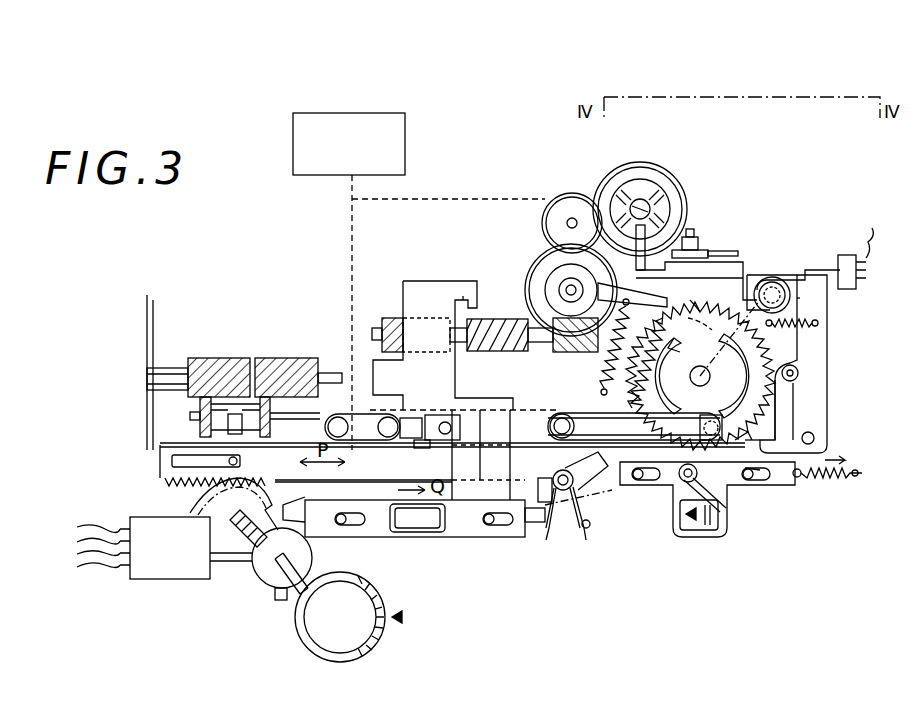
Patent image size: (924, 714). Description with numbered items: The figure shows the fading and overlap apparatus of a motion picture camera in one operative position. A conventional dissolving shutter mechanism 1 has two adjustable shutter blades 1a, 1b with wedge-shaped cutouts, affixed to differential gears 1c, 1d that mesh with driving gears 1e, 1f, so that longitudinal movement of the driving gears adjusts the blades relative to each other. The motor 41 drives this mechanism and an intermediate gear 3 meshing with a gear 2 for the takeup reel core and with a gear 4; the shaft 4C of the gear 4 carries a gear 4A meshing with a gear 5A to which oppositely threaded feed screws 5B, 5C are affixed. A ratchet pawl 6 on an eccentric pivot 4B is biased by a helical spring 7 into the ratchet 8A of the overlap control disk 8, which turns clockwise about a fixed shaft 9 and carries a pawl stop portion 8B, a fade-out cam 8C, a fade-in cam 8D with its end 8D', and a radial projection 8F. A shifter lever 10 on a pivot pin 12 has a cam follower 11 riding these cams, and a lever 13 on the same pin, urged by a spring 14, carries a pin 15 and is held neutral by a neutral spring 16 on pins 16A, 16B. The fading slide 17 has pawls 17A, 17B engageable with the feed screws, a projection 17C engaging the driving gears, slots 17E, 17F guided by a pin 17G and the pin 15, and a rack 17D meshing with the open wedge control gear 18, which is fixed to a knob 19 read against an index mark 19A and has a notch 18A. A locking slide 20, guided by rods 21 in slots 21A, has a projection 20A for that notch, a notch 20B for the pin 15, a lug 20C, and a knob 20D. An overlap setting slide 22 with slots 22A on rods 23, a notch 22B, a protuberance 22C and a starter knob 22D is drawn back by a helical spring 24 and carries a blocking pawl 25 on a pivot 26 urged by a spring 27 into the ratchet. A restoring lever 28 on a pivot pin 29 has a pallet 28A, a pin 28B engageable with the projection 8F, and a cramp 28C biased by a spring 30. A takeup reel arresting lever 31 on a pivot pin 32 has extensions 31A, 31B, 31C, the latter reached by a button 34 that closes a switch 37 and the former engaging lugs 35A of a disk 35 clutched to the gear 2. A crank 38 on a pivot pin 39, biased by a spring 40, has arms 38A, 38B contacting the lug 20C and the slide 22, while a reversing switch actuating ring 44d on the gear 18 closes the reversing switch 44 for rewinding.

The dissolving shutter mechanism 1 is at (246, 271).
The shutter blade 1a is at (147, 310).
The shutter blade 1b is at (153, 315).
The differential gear 1c is at (215, 358).
The differential gear 1d is at (288, 358).
The driving gear 1e is at (200, 424).
The driving gear 1f is at (270, 427).
The gear 2 is at (620, 166).
The intermediate gear 3 is at (556, 196).
The gear 4 is at (536, 265).
The gear 4A is at (545, 288).
The pivot 4B is at (559, 290).
The shaft 4C is at (576, 290).
The gear 5A is at (575, 352).
The feed screw 5B is at (508, 352).
The feed screw 5C is at (390, 318).
The ratchet pawl 6 is at (623, 284).
The helical spring 7 is at (609, 350).
The overlap control disk 8 is at (718, 308).
The ratchet 8A is at (704, 300).
The pawl stop portion 8B is at (694, 327).
The fade-out cam 8C is at (752, 375).
The fade-in cam 8D is at (672, 376).
The arm hook 8D' is at (688, 345).
The projection 8F is at (780, 410).
The shaft 9 is at (708, 382).
The shifter lever 10 is at (703, 415).
The cam follower 11 is at (746, 442).
The pivot pin 12 is at (564, 413).
The lever 13 is at (532, 413).
The spring 14 is at (632, 410).
The pin 15 is at (438, 415).
The neutral spring 16 is at (375, 414).
The pin 16A is at (340, 417).
The pin 16B is at (400, 412).
The fading slide 17 is at (420, 286).
The pawl 17A is at (467, 296).
The pawl 17B is at (373, 362).
The projection 17C is at (236, 434).
The toothed portion 17D is at (170, 482).
The elongated slot 17E is at (172, 461).
The elongated slot 17F is at (423, 448).
The pin 17G is at (206, 490).
The open wedge control gear 18 is at (252, 548).
The notch 18A is at (270, 572).
The knob 19 is at (320, 652).
The index mark 19A is at (403, 625).
The locking slide 20 is at (385, 537).
The projection 20A is at (290, 492).
The notch 20B is at (450, 422).
The lug 20C is at (540, 522).
The knob 20D is at (437, 537).
The rod 21 is at (340, 525).
The elongated slot 21A is at (357, 525).
The overlap setting slide 22 is at (760, 486).
The elongated slot 22A is at (642, 480).
The notch 22B is at (797, 478).
The protuberance 22C is at (600, 492).
The overlap starter knob 22D is at (697, 530).
The rod 23 is at (652, 482).
The helical spring 24 is at (828, 478).
The blocking pawl 25 is at (748, 480).
The pivot 26 is at (683, 482).
The spring 27 is at (695, 500).
The restoring lever 28 is at (827, 398).
The pallet 28A is at (769, 428).
The pin 28B is at (799, 372).
The cramp 28C is at (800, 298).
The pivot pin 29 is at (814, 437).
The helical spring 30 is at (790, 328).
The takeup reel arresting lever 31 is at (718, 262).
The lower extension 31A is at (730, 338).
The integral extension 31B is at (650, 232).
The extension 31C is at (766, 277).
The pivot pin 32 is at (698, 240).
The button 34 is at (800, 270).
The disk 35 is at (644, 172).
The lug 35A is at (654, 188).
The switch 37 is at (846, 255).
The crank 38 is at (585, 530).
The arm 38A is at (549, 545).
The arm 38B is at (580, 460).
The pivot pin 39 is at (553, 482).
The spring 40 is at (582, 530).
The motor 41 is at (293, 150).
The reversing switch 44 is at (160, 579).
The reversing switch actuating ring 44d is at (281, 600).